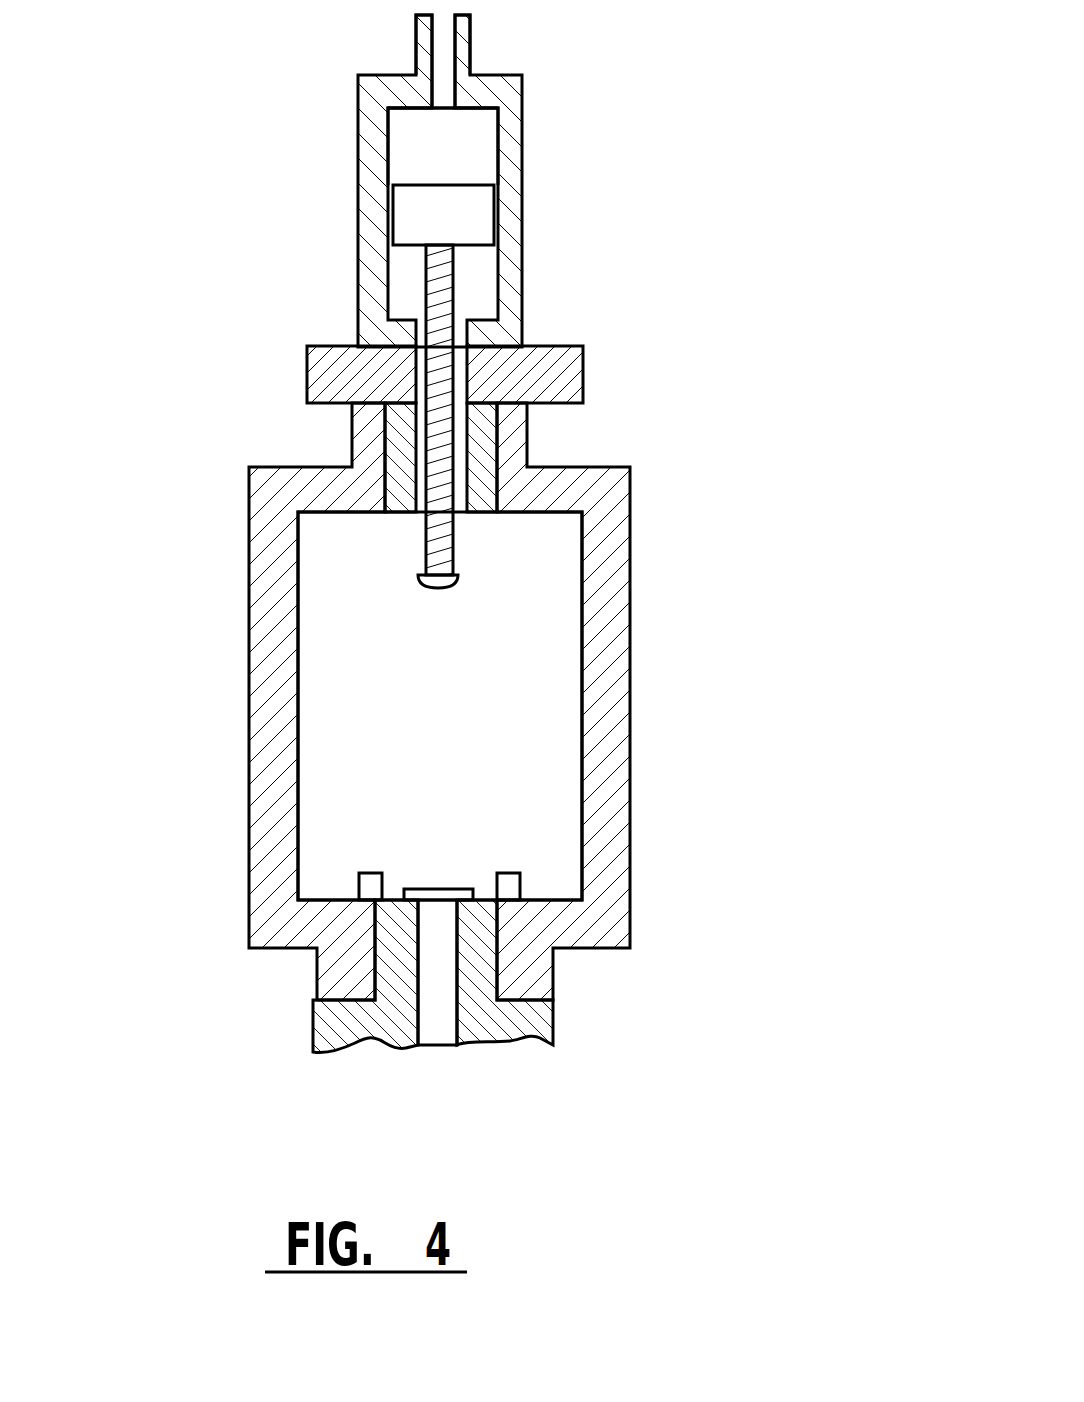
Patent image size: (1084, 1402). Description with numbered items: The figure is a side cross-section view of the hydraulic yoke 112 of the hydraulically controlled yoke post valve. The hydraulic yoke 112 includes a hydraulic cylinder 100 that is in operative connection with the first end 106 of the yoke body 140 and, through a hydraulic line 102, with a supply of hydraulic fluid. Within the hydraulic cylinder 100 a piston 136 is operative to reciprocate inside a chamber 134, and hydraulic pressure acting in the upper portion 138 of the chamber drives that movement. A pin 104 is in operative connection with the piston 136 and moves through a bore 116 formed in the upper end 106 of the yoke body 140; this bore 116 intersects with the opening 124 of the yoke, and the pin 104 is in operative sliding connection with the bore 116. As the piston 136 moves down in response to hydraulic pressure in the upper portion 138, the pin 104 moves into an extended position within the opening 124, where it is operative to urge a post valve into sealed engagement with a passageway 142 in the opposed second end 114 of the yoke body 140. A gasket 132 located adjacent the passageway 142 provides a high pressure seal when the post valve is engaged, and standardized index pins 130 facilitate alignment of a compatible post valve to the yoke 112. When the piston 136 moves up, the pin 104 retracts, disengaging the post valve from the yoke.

The hydraulic cylinder 100 is at (524, 223).
The hydraulic line 102 is at (470, 38).
The pin 104 is at (455, 553).
The first end 106 is at (478, 443).
The hydraulic yoke 112 is at (625, 340).
The second end 114 is at (553, 900).
The bore 116 is at (423, 433).
The opening 124 is at (386, 652).
The index pins 130 is at (372, 873).
The gasket 132 is at (432, 888).
The chamber 134 is at (415, 134).
The piston 136 is at (413, 218).
The upper portion 138 is at (453, 153).
The yoke body 140 is at (288, 496).
The passageway 142 is at (435, 1032).